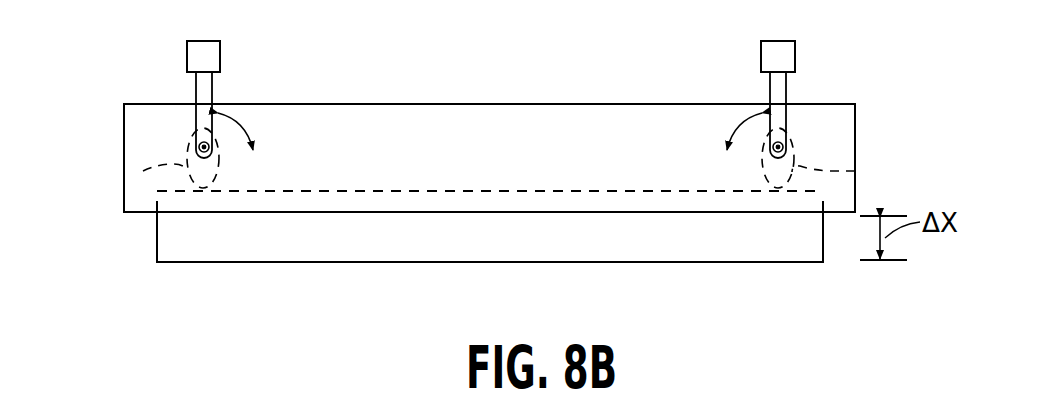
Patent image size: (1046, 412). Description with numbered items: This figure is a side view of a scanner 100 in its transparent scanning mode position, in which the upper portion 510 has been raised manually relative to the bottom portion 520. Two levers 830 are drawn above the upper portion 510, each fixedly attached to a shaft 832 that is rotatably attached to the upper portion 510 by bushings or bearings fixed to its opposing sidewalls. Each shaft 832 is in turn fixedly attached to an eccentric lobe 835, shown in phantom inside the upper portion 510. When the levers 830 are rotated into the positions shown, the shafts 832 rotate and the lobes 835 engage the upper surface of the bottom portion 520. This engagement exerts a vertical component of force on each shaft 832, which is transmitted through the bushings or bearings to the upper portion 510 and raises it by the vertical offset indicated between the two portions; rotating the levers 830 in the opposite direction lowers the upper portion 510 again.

The scanner 100 is at (856, 128).
The upper portion 510 is at (616, 110).
The bottom portion 520 is at (441, 251).
The lever 830 is at (212, 92).
The shaft 832 is at (203, 152).
The eccentric lobe 835 is at (143, 171).